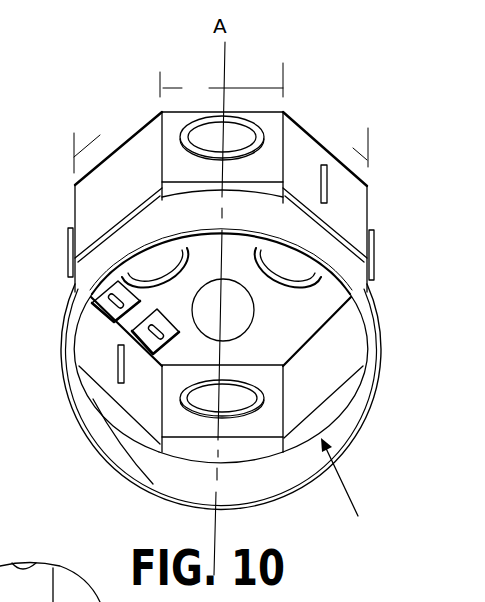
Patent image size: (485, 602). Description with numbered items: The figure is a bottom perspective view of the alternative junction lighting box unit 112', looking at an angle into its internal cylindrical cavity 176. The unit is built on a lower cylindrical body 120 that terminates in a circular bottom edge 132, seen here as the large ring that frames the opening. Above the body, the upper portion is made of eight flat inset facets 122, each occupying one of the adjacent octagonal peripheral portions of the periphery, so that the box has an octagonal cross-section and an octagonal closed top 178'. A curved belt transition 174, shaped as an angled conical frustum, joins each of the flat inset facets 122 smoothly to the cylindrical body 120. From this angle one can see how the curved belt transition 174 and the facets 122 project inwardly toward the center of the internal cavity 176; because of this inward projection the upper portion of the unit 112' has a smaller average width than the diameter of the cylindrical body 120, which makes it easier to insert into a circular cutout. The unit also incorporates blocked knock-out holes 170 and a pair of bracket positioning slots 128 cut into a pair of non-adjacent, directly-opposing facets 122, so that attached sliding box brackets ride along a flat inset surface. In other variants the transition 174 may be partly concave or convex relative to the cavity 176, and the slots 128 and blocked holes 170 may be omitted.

The junction lighting box unit 112' is at (221, 258).
The cylindrical body 120 is at (343, 418).
The flat inset facet 122 is at (265, 157).
The bracket positioning slot 128 is at (326, 200).
The circular bottom edge 132 is at (369, 426).
The blocked knock-out hole 170 is at (213, 143).
The curved belt transition 174 is at (193, 450).
The internal cavity 176 is at (353, 487).
The octagonal closed top 178' is at (320, 310).